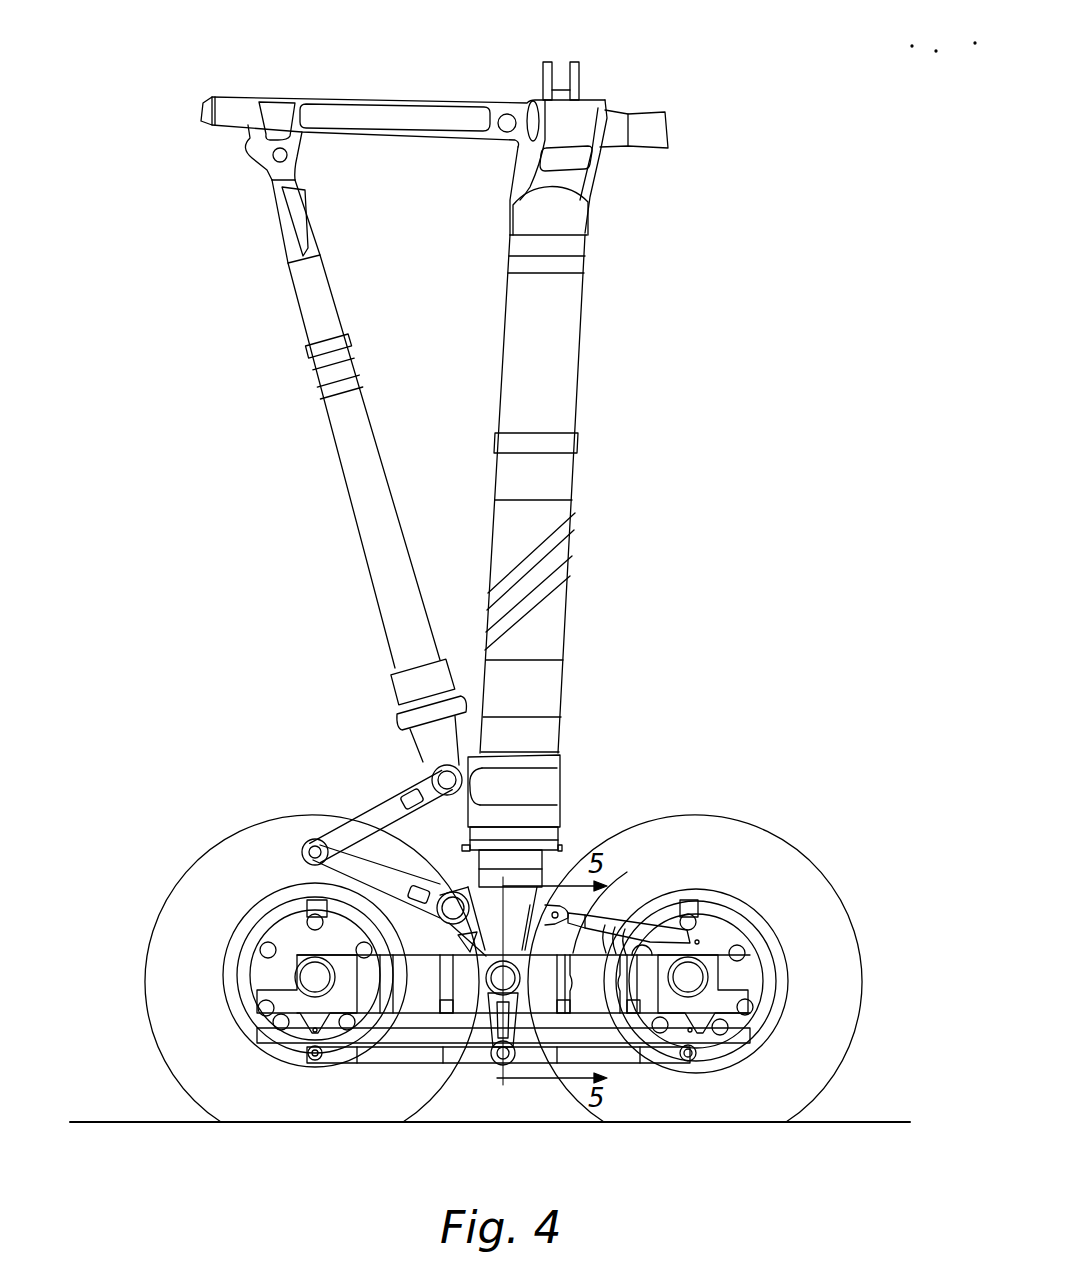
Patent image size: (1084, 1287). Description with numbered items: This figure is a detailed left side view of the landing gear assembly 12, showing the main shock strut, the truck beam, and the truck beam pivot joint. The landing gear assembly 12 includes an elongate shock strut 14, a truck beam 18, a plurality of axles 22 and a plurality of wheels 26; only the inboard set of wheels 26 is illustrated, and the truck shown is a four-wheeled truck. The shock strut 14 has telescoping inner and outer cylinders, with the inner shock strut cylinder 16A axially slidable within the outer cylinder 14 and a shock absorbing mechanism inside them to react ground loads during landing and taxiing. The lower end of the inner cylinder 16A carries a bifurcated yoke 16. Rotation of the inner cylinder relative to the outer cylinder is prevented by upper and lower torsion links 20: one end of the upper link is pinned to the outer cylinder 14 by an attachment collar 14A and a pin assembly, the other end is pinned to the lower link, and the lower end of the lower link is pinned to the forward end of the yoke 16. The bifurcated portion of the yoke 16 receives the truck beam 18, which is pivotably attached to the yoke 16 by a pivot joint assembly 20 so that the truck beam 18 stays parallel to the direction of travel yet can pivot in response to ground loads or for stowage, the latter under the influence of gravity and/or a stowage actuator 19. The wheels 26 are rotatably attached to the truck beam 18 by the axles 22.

The landing gear assembly 12 is at (636, 74).
The shock strut 14 is at (563, 479).
The attachment collar 14A is at (562, 766).
The bifurcated yoke 16 is at (487, 917).
The inner shock strut cylinder 16A is at (556, 857).
The truck beam 18 is at (378, 990).
The stowage actuator 19 is at (680, 927).
The torsion links 20 is at (370, 813).
The axles 22 is at (303, 978).
The wheels 26 is at (792, 842).